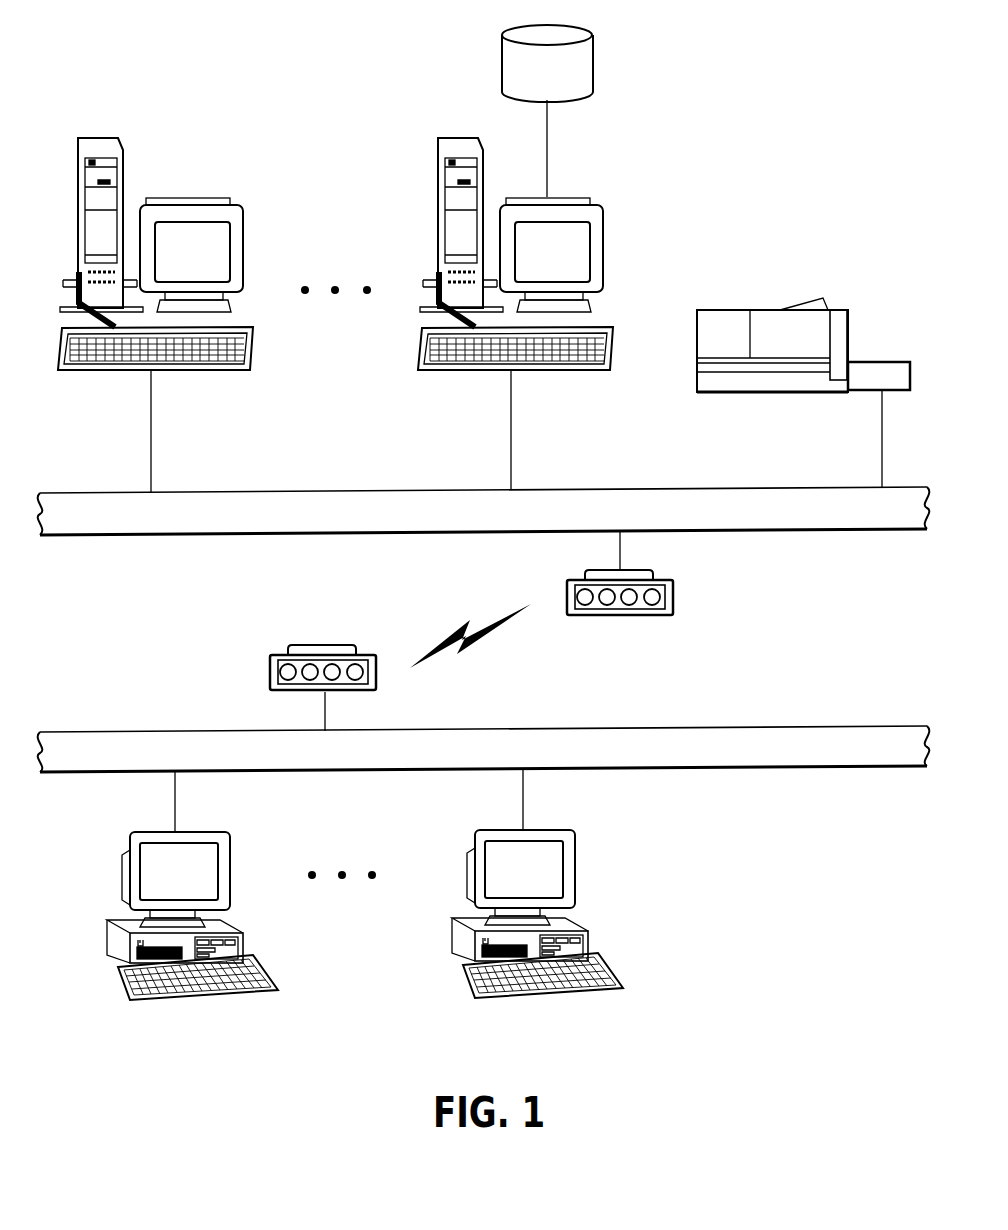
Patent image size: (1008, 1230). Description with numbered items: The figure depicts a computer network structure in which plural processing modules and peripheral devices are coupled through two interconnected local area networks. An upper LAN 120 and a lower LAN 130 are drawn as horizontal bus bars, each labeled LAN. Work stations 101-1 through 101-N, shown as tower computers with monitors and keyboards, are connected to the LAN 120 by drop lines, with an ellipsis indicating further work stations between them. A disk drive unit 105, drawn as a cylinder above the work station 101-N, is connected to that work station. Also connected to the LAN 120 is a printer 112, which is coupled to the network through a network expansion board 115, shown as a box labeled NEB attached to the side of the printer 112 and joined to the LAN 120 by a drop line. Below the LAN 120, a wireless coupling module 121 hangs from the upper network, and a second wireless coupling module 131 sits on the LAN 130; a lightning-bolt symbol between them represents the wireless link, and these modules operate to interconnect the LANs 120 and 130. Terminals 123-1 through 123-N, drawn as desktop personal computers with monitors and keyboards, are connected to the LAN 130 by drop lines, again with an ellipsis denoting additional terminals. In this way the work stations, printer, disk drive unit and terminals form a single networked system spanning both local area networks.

The disk drive unit 105 is at (593, 52).
The work station 101-1 is at (173, 197).
The work station 101-N is at (570, 197).
The printer 112 is at (738, 310).
The network expansion board 115 is at (868, 362).
The LAN 120 is at (293, 493).
The wireless coupling module 121 is at (673, 603).
The wireless coupling module 131 is at (270, 675).
The LAN 130 is at (675, 727).
The terminal 123-1 is at (230, 845).
The terminal 123-N is at (575, 843).